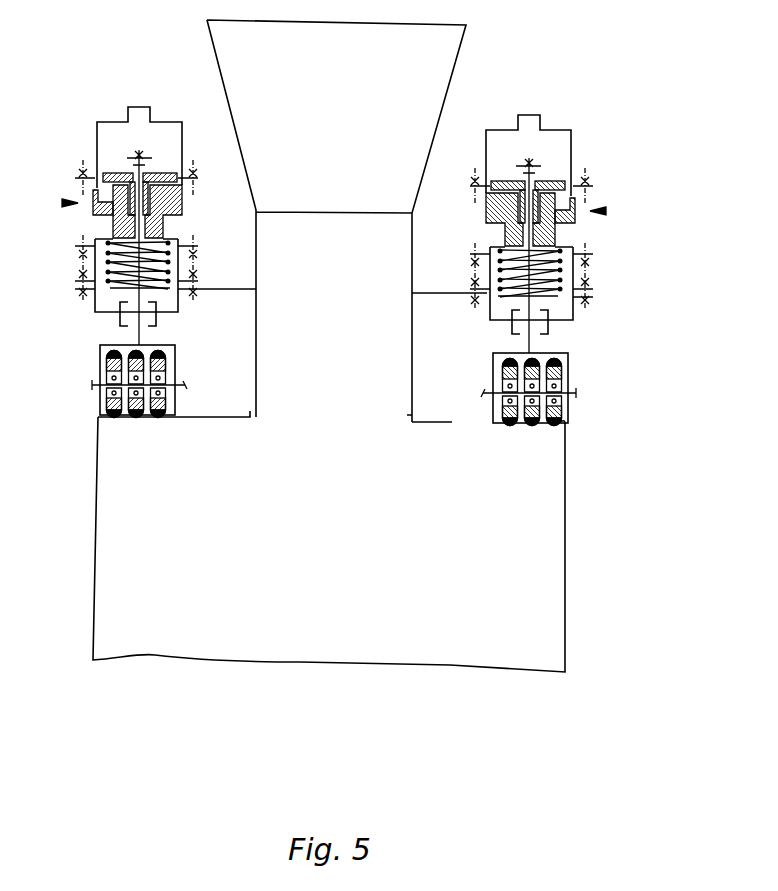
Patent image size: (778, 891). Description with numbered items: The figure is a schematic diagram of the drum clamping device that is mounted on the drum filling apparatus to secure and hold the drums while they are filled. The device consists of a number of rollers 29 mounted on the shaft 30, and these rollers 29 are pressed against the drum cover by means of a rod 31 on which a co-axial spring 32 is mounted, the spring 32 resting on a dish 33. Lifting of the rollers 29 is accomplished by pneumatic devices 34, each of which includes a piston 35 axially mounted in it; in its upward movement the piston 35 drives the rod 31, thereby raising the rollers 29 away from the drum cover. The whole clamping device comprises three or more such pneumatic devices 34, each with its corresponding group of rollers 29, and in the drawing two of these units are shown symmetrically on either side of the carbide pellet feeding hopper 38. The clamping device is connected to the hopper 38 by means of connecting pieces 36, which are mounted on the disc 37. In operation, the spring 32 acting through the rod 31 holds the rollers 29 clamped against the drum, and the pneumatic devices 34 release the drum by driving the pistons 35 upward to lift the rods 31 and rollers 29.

The rollers 29 is at (117, 417).
The shaft 30 is at (94, 386).
The rod 31 is at (141, 335).
The spring 32 is at (107, 263).
The dish 33 is at (125, 289).
The pneumatic device 34 is at (96, 123).
The piston 35 is at (103, 173).
The connecting piece 36 is at (117, 316).
The disc 37 is at (235, 289).
The carbide pellet feeding hopper 38 is at (218, 63).